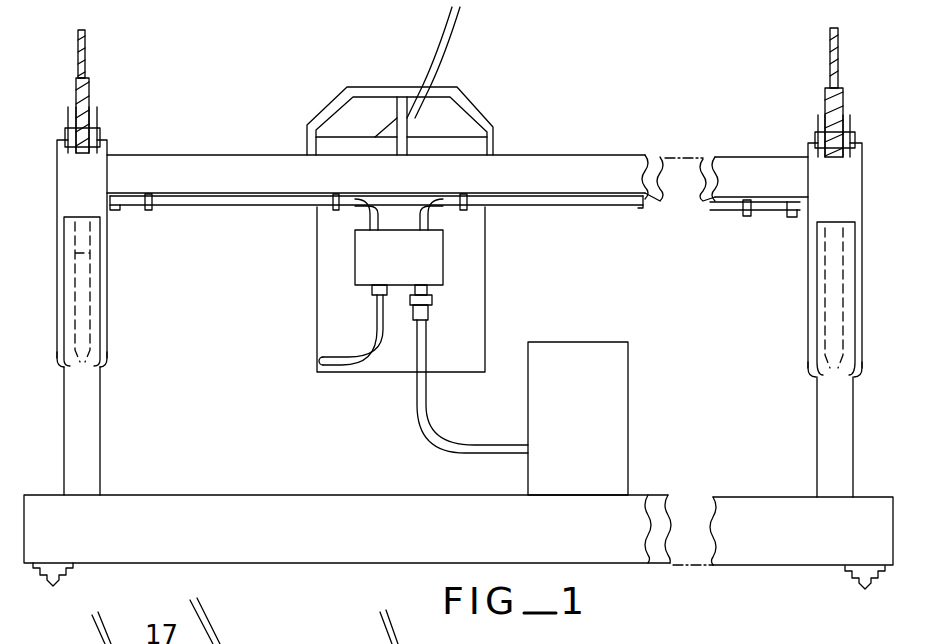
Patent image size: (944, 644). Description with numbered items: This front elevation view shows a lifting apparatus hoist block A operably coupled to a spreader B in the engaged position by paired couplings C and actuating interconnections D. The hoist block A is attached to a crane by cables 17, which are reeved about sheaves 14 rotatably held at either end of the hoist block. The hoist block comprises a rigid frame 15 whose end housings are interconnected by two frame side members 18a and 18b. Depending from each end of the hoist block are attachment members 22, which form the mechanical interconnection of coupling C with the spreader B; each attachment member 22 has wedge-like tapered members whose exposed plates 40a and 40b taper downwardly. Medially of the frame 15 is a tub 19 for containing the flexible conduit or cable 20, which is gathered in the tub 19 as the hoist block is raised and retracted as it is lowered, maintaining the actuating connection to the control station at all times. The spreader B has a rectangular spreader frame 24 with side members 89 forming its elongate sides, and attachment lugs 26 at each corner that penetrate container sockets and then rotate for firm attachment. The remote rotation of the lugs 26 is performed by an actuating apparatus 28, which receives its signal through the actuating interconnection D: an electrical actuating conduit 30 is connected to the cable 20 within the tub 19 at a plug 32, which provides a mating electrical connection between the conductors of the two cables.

The sheaves 14 is at (77, 92).
The hoist block frame 15 is at (594, 155).
The cables 17 is at (84, 53).
The frame side member 18a is at (235, 153).
The frame side member 18b is at (652, 157).
The tub 19 is at (488, 258).
The cable 20 is at (461, 33).
The attachment member 22 is at (109, 317).
The spreader frame 24 is at (458, 489).
The attachment lugs 26 is at (50, 584).
The actuating apparatus 28 is at (592, 424).
The actuating conduit 30 is at (417, 406).
The plug 32 is at (433, 308).
The exposed plate 40a is at (56, 355).
The exposed plate 40b is at (109, 361).
The side members 89 is at (367, 542).
The hoist block A is at (119, 131).
The spreader B is at (146, 476).
The couplings C is at (139, 336).
The actuating interconnections D is at (432, 355).